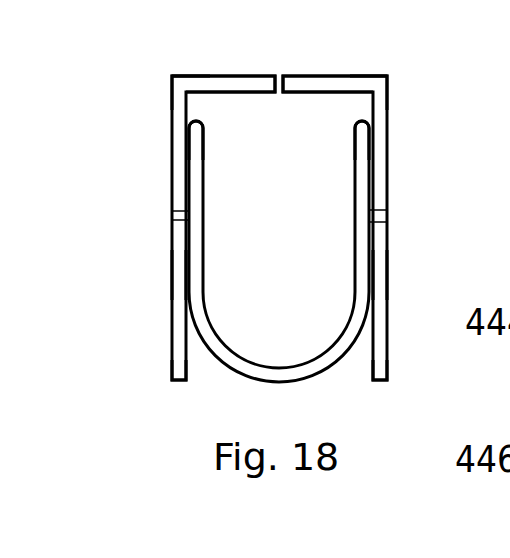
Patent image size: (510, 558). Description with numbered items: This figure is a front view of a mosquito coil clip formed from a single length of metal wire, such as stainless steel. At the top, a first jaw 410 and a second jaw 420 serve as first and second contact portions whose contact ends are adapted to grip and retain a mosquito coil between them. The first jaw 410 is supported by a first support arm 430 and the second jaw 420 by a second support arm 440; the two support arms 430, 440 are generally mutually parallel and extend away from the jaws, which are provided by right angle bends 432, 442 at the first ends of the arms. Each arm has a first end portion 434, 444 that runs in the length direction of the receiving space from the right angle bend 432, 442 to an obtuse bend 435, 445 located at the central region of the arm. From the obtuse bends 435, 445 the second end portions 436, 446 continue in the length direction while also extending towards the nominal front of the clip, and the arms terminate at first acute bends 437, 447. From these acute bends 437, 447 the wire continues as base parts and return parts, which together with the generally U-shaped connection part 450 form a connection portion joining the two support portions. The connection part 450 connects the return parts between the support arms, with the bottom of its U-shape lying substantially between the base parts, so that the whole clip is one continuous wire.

The first jaw 410 is at (240, 85).
The second jaw 420 is at (332, 83).
The first support arm 430 is at (172, 170).
The right angle bend 432 is at (172, 76).
The first end portion 434 is at (183, 132).
The obtuse bend 435 is at (172, 213).
The second end portion 436 is at (184, 271).
The first acute bend 437 is at (180, 377).
The second support arm 440 is at (388, 162).
The right angle bend 442 is at (388, 76).
The first end portion 444 is at (377, 128).
The obtuse bend 445 is at (388, 217).
The second end portion 446 is at (380, 278).
The first acute bend 447 is at (380, 372).
The connection part 450 is at (237, 363).